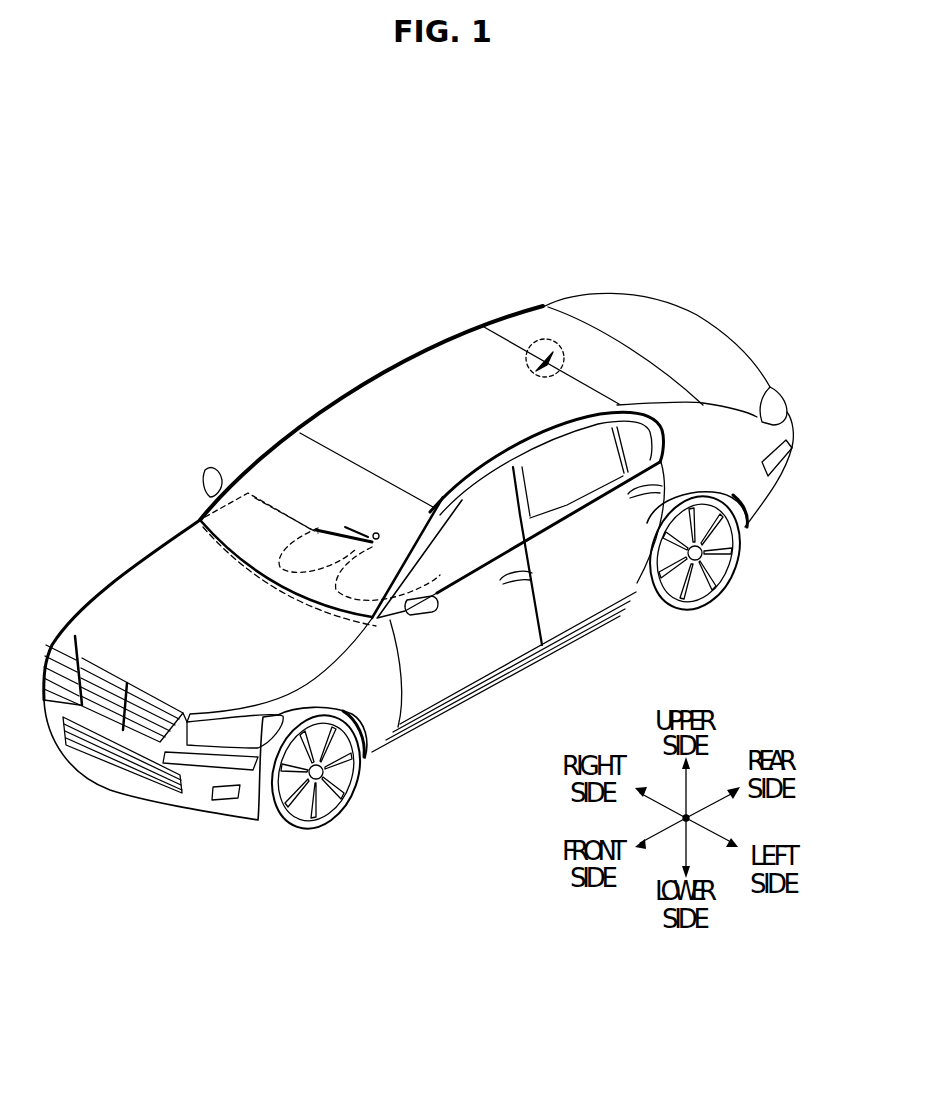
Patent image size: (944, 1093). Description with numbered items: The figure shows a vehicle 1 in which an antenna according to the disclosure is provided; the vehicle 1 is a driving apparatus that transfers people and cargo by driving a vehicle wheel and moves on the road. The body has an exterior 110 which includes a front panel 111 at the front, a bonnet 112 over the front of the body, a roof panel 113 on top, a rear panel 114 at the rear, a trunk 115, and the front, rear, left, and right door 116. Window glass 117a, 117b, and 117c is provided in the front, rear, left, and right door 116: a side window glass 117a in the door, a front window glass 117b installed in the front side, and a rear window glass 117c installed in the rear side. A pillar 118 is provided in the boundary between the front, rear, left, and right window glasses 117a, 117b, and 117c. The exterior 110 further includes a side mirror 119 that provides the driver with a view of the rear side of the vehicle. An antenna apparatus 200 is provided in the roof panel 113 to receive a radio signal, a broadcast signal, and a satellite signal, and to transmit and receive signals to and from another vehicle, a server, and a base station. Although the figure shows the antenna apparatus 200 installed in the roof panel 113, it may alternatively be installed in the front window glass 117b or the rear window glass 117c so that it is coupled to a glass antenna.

The vehicle 1 is at (166, 182).
The exterior 110 is at (543, 266).
The front panel 111 is at (200, 787).
The bonnet 112 is at (133, 637).
The roof panel 113 is at (403, 387).
The rear panel 114 is at (787, 475).
The trunk 115 is at (677, 332).
The door 116 is at (505, 648).
The side window glass 117a is at (493, 513).
The front window glass 117b is at (355, 490).
The rear window glass 117c is at (590, 372).
The pillar 118 is at (623, 443).
The side mirror 119 is at (207, 468).
The antenna apparatus 200 is at (543, 340).